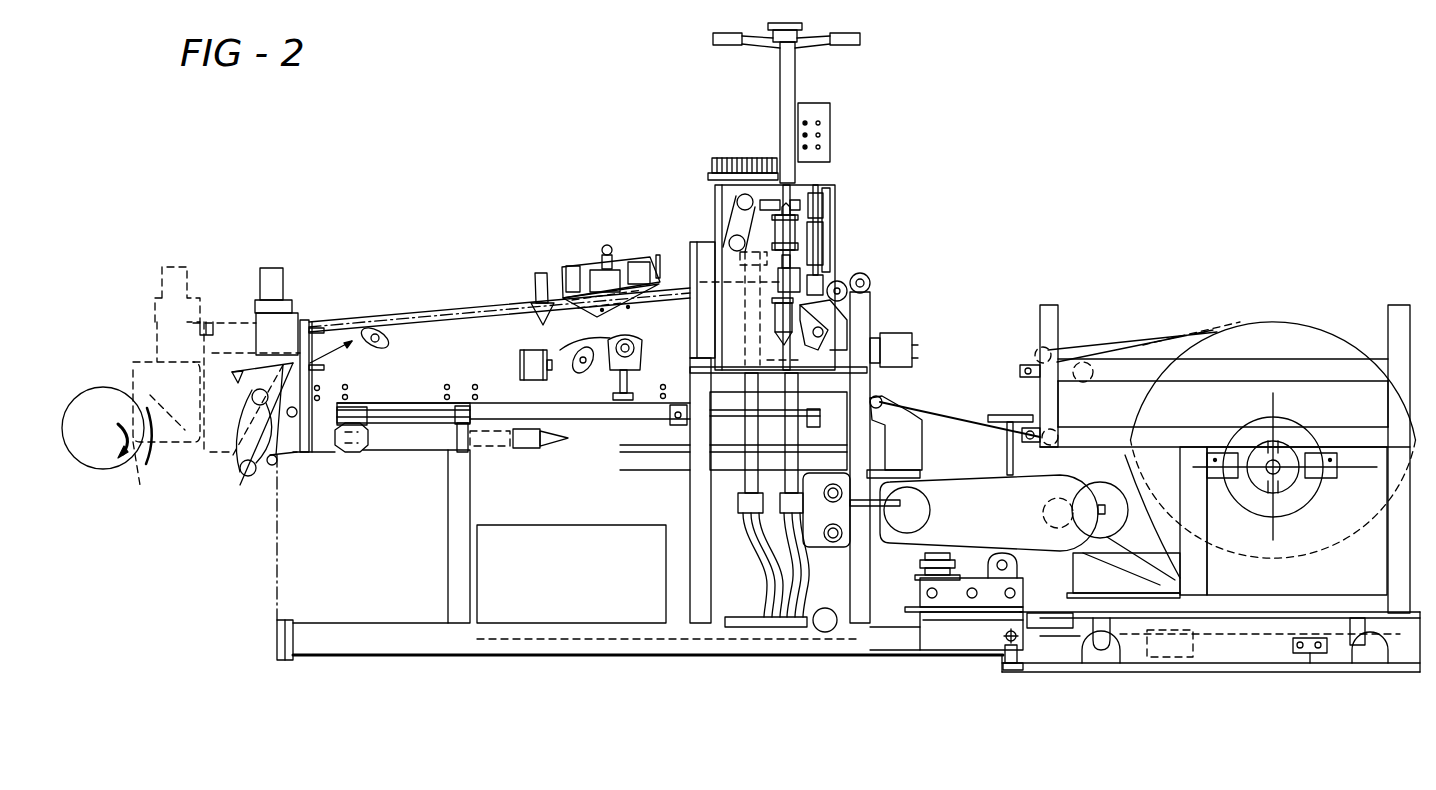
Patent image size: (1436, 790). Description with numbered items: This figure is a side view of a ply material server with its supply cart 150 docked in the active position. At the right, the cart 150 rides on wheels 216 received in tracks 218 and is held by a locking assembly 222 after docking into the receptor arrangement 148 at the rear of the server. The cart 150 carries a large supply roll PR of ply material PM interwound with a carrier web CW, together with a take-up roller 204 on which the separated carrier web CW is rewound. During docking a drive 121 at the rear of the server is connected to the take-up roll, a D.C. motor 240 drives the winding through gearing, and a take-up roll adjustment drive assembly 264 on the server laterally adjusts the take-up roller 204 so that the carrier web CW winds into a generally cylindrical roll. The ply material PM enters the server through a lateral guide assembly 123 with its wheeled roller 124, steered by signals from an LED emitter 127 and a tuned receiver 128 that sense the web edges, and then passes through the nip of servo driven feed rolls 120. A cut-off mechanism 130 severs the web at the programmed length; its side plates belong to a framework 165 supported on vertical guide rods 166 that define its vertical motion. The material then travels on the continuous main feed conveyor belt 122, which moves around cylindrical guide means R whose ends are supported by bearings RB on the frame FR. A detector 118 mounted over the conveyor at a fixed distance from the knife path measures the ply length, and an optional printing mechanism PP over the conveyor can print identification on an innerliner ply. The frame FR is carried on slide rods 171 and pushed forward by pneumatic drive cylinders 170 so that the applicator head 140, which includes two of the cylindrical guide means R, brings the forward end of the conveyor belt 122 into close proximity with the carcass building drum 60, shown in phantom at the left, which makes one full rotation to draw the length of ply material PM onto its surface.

The carcass building drum 60 is at (106, 400).
The ply material PM is at (118, 470).
The cylindrical guide means R is at (258, 390).
The applicator head 140 is at (282, 468).
The main feed conveyor belt 122 is at (440, 317).
The bearings RB is at (378, 340).
The detector (length scanner) 118 is at (542, 274).
The printing mechanism PP is at (627, 250).
The pneumatic drive cylinders 170 is at (417, 428).
The slide rods 171 is at (388, 424).
The frame FR is at (490, 385).
The LED emitter 127 is at (547, 380).
The cut-off mechanism 130 is at (848, 163).
The vertical guide rods 166 is at (823, 213).
The framework 165 is at (817, 243).
The feed rolls 120 is at (850, 257).
The wheeled roller 124 is at (880, 395).
The tuned receiver 128 is at (900, 340).
The lateral guide assembly 123 is at (900, 416).
The drive 121 is at (977, 476).
The D.C. motor 240 is at (918, 512).
The take-up roll adjustment drive assembly 264 is at (1000, 597).
The receptor arrangement 148 is at (970, 660).
The take-up roller 204 is at (1072, 675).
The tracks 218 is at (1173, 673).
The wheels 216 is at (1382, 675).
The cart 150 is at (1190, 593).
The supply roll PR is at (1270, 337).
The locking assembly 222 is at (1243, 640).
The carrier web CW is at (1155, 436).